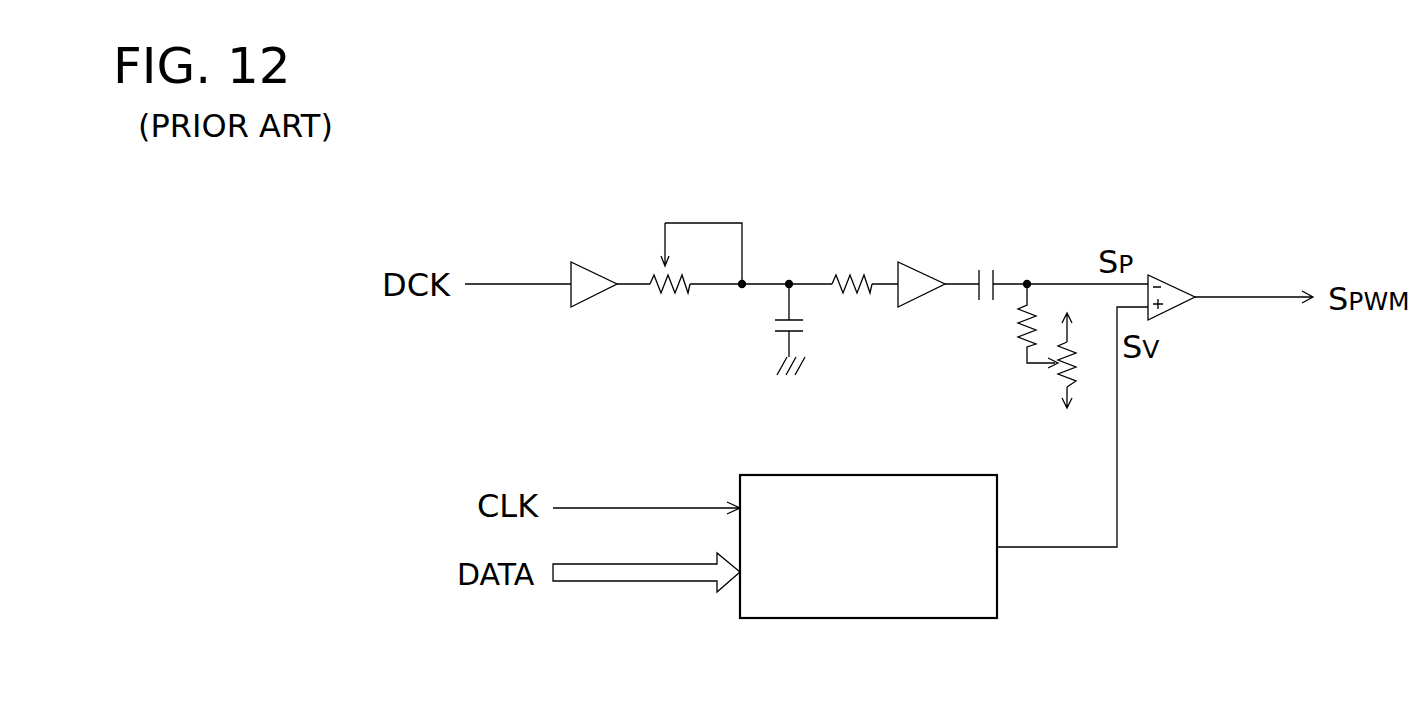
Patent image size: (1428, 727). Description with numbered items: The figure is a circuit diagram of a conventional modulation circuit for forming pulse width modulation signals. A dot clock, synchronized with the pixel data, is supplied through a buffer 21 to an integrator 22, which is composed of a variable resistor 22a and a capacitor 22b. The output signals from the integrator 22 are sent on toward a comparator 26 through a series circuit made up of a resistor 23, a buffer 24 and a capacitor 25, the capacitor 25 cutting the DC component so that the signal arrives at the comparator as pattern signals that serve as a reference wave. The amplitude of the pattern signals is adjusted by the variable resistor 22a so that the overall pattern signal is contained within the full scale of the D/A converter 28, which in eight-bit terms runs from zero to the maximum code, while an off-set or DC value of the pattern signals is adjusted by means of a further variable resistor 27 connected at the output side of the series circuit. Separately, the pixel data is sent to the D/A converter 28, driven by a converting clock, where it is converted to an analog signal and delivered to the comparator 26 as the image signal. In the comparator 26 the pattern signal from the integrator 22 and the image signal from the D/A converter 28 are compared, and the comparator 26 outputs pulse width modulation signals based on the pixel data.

The buffer 21 is at (585, 307).
The integrator 22 is at (708, 210).
The variable resistor 22a is at (672, 300).
The capacitor 22b is at (806, 325).
The resistor 23 is at (845, 272).
The buffer 24 is at (915, 272).
The capacitor 25 is at (986, 268).
The comparator 26 is at (1172, 278).
The variable resistor 27 is at (1081, 360).
The D/A converter 28 is at (851, 620).